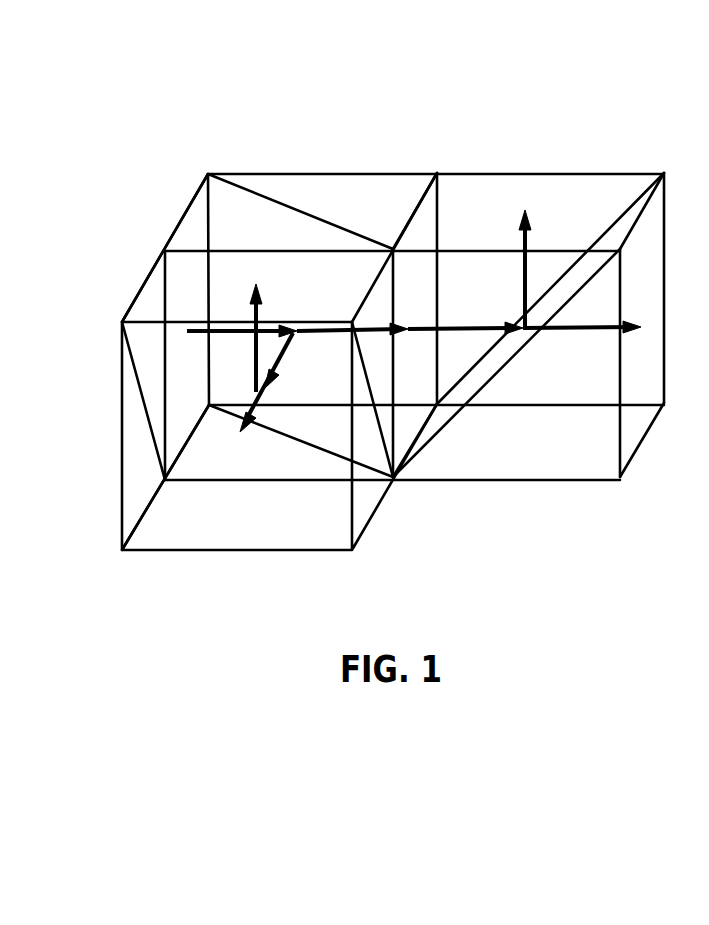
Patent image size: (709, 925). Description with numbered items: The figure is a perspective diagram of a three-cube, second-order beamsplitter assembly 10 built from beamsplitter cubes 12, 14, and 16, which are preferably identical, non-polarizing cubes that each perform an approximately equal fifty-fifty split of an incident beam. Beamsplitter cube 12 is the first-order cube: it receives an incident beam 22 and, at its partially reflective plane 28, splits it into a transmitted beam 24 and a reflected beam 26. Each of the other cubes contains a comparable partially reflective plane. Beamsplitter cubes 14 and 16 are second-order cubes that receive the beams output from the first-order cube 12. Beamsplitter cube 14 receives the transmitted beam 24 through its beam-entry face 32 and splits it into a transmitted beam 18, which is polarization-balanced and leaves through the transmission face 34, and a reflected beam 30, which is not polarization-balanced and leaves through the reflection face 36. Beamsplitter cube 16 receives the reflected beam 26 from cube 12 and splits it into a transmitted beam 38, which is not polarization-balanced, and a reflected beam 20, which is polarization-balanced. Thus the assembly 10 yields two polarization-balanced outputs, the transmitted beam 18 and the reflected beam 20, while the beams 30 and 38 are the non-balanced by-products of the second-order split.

The second-order beamsplitter assembly 10 is at (374, 66).
The beamsplitter cube 12 is at (308, 173).
The beamsplitter cube 14 is at (492, 172).
The beamsplitter cube 16 is at (138, 291).
The transmitted beam 18 is at (637, 317).
The reflected beam 20 is at (247, 288).
The incident beam 22 is at (198, 333).
The transmitted beam 24 is at (365, 345).
The reflected beam 26 is at (287, 342).
The partially reflective plane 28 is at (247, 192).
The reflected beam 30 is at (530, 237).
The beam-entry face 32 is at (423, 222).
The transmission face 34 is at (633, 432).
The reflection face 36 is at (538, 190).
The transmitted beam 38 is at (242, 428).